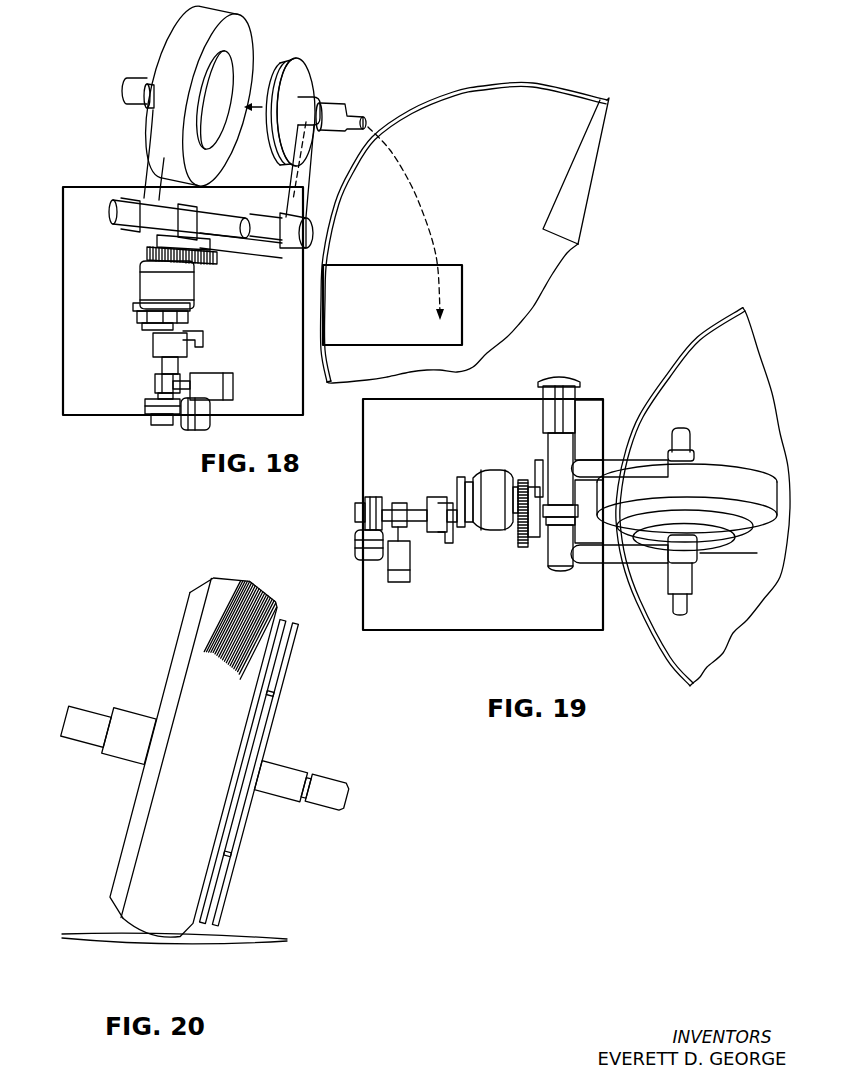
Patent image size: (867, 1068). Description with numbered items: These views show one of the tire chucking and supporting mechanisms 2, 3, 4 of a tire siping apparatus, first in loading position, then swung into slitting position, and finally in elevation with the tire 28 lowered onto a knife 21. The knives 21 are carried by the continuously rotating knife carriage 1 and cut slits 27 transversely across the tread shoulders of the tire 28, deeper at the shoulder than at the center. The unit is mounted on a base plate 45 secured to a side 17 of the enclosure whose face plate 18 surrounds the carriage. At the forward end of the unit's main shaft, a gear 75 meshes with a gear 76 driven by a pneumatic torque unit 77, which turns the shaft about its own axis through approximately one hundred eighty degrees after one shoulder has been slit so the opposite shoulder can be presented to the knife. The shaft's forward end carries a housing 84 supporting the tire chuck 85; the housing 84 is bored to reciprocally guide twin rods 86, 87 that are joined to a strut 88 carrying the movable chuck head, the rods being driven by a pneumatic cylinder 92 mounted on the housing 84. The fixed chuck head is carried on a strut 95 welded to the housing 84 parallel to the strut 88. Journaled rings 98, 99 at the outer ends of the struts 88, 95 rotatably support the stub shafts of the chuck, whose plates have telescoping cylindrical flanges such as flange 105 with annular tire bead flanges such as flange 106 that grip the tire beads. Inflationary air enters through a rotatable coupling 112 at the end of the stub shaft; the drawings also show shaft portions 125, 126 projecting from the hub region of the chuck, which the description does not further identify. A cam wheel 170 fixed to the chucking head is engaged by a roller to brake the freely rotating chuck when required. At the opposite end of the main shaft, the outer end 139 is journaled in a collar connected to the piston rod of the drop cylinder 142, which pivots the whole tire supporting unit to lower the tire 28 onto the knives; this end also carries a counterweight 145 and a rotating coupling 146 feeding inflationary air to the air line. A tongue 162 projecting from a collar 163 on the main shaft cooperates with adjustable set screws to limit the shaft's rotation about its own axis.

In FIG. 18, the knife carriage 1 is at (460, 228).
In FIG. 19, the knife carriage 1 is at (703, 495).
In FIG. 18, the tire chucking and supporting mechanism 2 is at (171, 284).
In FIG. 19, the tire chucking and supporting mechanism 2 is at (483, 533).
In FIG. 18, the tire chucking and supporting mechanism 3 is at (171, 284).
In FIG. 19, the tire chucking and supporting mechanism 3 is at (483, 533).
In FIG. 18, the tire chucking and supporting mechanism 4 is at (112, 193).
In FIG. 19, the tire chucking and supporting mechanism 4 is at (448, 612).
In FIG. 18, the side 17 is at (439, 102).
In FIG. 19, the side 17 is at (702, 334).
In FIG. 18, the face plate 18 is at (344, 378).
In FIG. 19, the face plate 18 is at (676, 378).
In FIG. 20, the knife 21 is at (75, 935).
In FIG. 20, the slit 27 is at (262, 594).
In FIG. 18, the tire 28 is at (170, 58).
In FIG. 19, the tire 28 is at (742, 482).
In FIG. 20, the tire 28 is at (190, 637).
In FIG. 18, the base plate 45 is at (171, 305).
In FIG. 19, the base plate 45 is at (483, 533).
In FIG. 18, the gear 75 is at (210, 257).
In FIG. 19, the gear 75 is at (522, 548).
In FIG. 18, the gear 76 is at (152, 249).
In FIG. 19, the gear 76 is at (530, 486).
In FIG. 18, the pneumatic torque unit 77 is at (193, 282).
In FIG. 19, the pneumatic torque unit 77 is at (496, 523).
In FIG. 18, the housing 84 is at (140, 229).
In FIG. 19, the housing 84 is at (536, 467).
In FIG. 18, the tire chuck 85 is at (277, 66).
In FIG. 19, the tire chuck 85 is at (738, 540).
In FIG. 20, the tire chuck 85 is at (131, 821).
In FIG. 18, the rod 86 is at (262, 222).
In FIG. 19, the rod 86 is at (575, 420).
In FIG. 18, the rod 87 is at (260, 246).
In FIG. 19, the rod 87 is at (548, 420).
In FIG. 18, the strut 88 is at (309, 158).
In FIG. 19, the strut 88 is at (645, 563).
In FIG. 18, the pneumatic cylinder 92 is at (112, 212).
In FIG. 19, the pneumatic cylinder 92 is at (560, 575).
In FIG. 18, the strut 95 is at (150, 163).
In FIG. 19, the strut 95 is at (630, 471).
In FIG. 18, the journaled ring 98 is at (314, 105).
In FIG. 19, the journaled ring 98 is at (699, 559).
In FIG. 20, the journaled ring 98 is at (131, 719).
In FIG. 18, the journaled ring 99 is at (150, 107).
In FIG. 19, the journaled ring 99 is at (696, 459).
In FIG. 20, the journaled ring 99 is at (283, 772).
In FIG. 18, the cylindrical flange 105 is at (313, 82).
In FIG. 18, the tire bead flange 106 is at (294, 67).
In FIG. 18, the rotatable coupling 112 is at (125, 84).
In FIG. 19, the rotatable coupling 112 is at (692, 439).
In FIG. 20, the rotatable coupling 112 is at (335, 794).
In FIG. 18, the shaft 125 is at (337, 113).
In FIG. 19, the shaft 125 is at (694, 586).
In FIG. 20, the shaft 125 is at (91, 717).
In FIG. 19, the shaft tip 126 is at (688, 607).
In FIG. 18, the outer end of main shaft 139 is at (160, 367).
In FIG. 19, the outer end of main shaft 139 is at (417, 507).
In FIG. 18, the drop cylinder 142 is at (186, 422).
In FIG. 19, the drop cylinder 142 is at (356, 546).
In FIG. 18, the counterweight 145 is at (233, 389).
In FIG. 19, the counterweight 145 is at (409, 573).
In FIG. 18, the rotating coupling 146 is at (146, 407).
In FIG. 19, the rotating coupling 146 is at (356, 509).
In FIG. 18, the tongue 162 is at (205, 337).
In FIG. 19, the tongue 162 is at (441, 543).
In FIG. 18, the collar 163 is at (153, 344).
In FIG. 19, the collar 163 is at (431, 496).
In FIG. 20, the cam wheel 170 is at (284, 689).